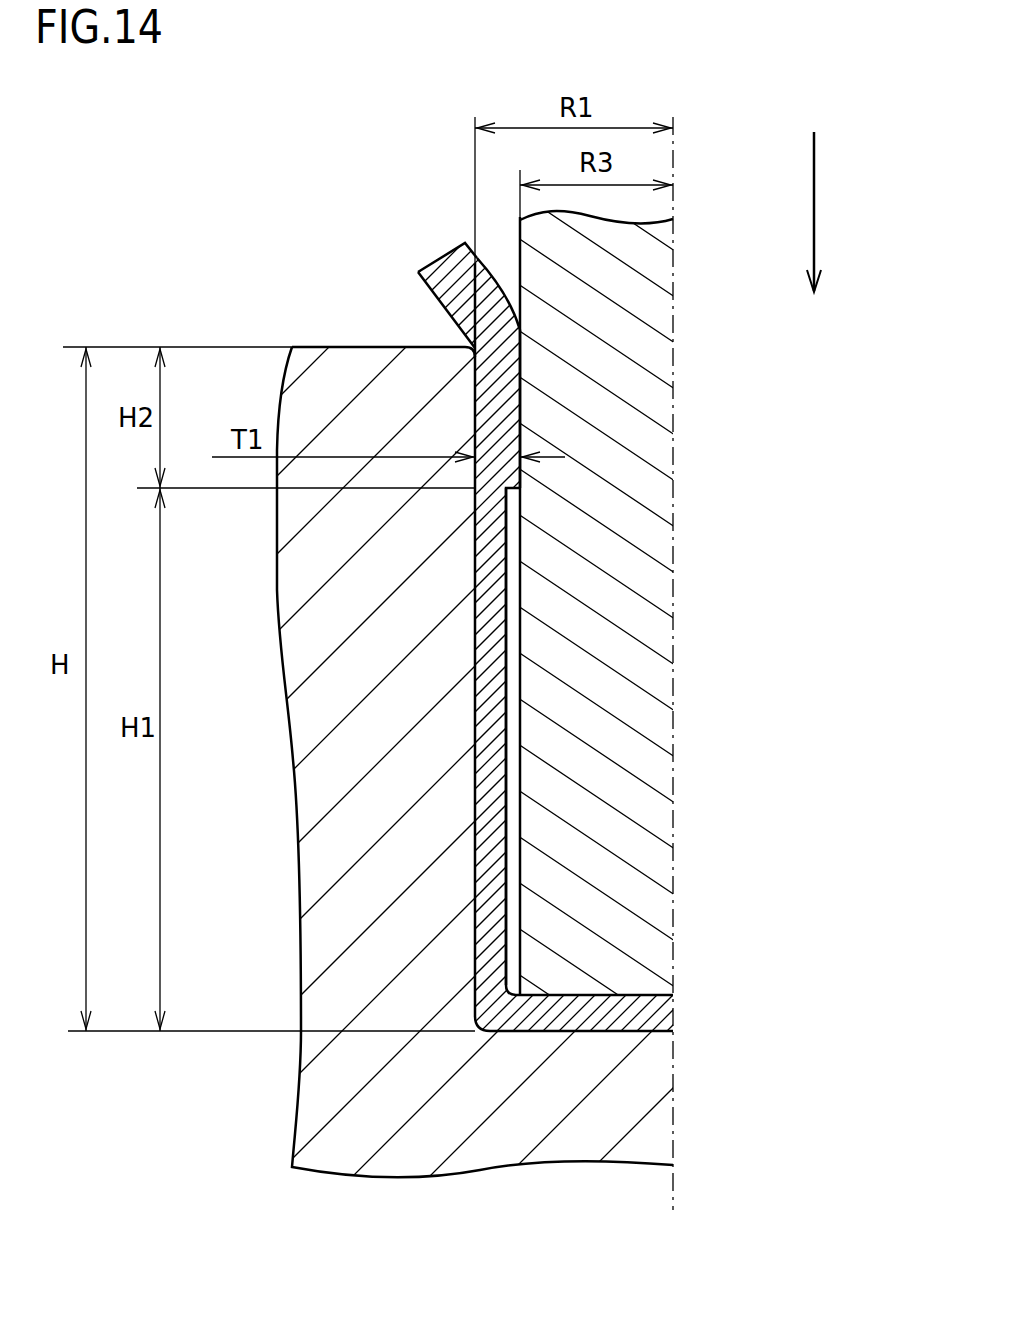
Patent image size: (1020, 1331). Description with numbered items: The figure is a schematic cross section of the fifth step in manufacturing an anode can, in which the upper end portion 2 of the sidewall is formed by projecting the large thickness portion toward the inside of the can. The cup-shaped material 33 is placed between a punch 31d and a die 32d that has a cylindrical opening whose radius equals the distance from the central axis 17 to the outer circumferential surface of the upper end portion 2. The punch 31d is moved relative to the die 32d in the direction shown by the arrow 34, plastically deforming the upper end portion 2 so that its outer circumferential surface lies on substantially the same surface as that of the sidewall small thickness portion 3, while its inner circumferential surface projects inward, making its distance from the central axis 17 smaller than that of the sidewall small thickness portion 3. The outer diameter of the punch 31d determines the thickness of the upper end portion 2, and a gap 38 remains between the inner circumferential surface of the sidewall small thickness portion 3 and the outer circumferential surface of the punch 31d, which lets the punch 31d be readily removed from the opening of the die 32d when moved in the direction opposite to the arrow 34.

The upper end portion 2 is at (498, 395).
The sidewall small thickness portion 3 is at (490, 690).
The central axis 17 is at (676, 153).
The punch 31d is at (620, 313).
The die 32d is at (392, 705).
The cup-shaped material 33 is at (452, 268).
The arrow 34 is at (817, 197).
The gap 38 is at (513, 745).